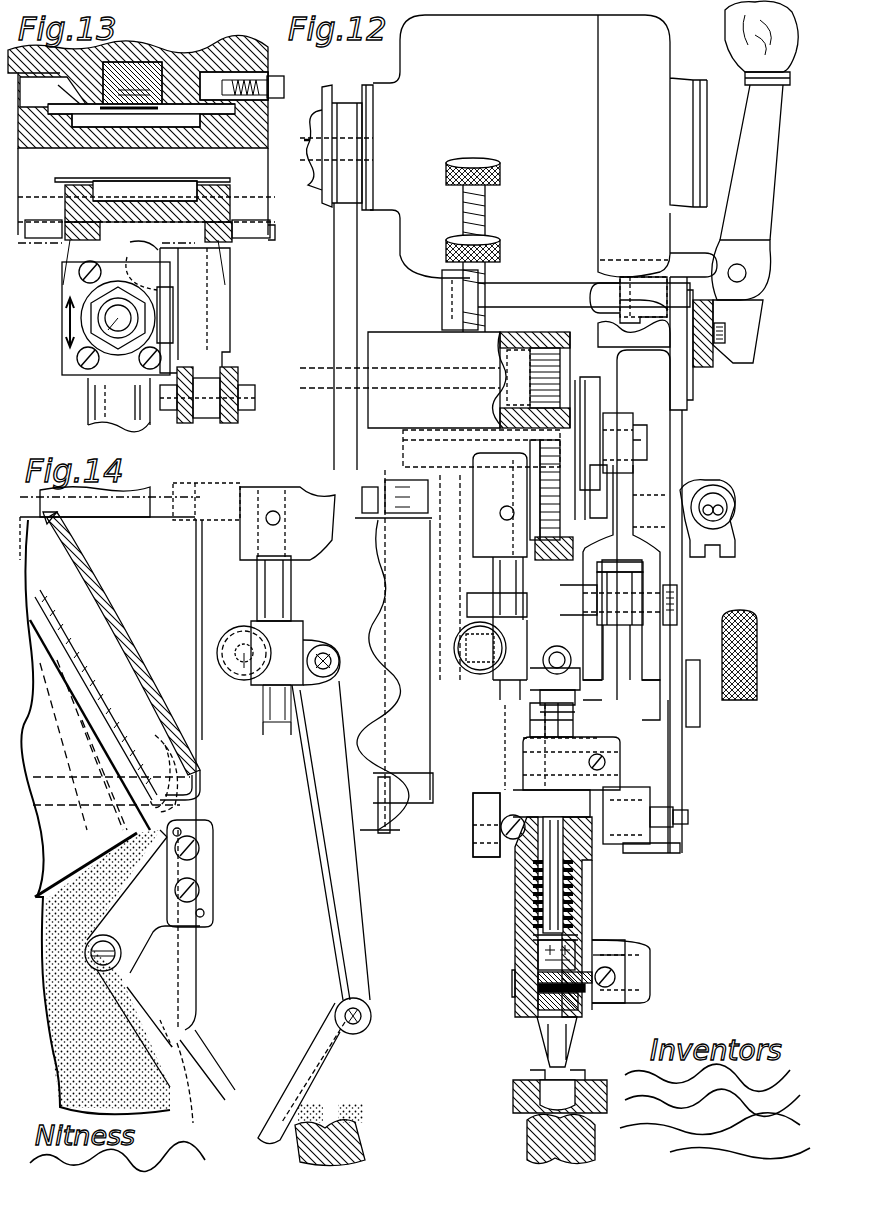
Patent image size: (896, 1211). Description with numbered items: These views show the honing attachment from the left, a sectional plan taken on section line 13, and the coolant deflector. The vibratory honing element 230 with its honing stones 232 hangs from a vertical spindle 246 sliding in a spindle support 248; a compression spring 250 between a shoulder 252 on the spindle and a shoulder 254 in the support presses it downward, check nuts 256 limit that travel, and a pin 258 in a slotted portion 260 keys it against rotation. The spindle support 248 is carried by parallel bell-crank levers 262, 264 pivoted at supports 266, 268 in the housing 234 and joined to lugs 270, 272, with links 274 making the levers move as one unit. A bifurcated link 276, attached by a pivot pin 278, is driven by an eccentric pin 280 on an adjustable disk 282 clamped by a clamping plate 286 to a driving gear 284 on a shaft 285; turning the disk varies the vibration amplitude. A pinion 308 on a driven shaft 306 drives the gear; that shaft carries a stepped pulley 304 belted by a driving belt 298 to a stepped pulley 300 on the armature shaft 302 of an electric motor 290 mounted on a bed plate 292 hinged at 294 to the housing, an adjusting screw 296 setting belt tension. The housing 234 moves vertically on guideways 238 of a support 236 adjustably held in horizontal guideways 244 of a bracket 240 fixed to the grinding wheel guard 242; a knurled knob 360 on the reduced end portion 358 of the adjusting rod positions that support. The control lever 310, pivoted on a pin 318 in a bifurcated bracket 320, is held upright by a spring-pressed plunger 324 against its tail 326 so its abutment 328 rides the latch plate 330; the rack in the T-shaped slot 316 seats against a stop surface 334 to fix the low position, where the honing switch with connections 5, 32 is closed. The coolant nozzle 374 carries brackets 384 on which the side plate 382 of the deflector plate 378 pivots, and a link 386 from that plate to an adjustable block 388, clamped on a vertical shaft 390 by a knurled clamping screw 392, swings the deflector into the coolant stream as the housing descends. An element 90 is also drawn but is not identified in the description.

In FIG. 12, the switch connection 5 is at (733, 498).
In FIG. 12, the section line 13 is at (440, 665).
In FIG. 12, the switch connection 32 is at (730, 515).
In FIG. 14, the lever 90 is at (105, 1005).
In FIG. 13, the vibratory honing element 230 is at (75, 378).
In FIG. 12, the vibratory honing element 230 is at (515, 1088).
In FIG. 12, the honing stones 232 is at (540, 1120).
In FIG. 14, the honing stones 232 is at (340, 1118).
In FIG. 13, the housing 234 is at (200, 135).
In FIG. 12, the housing 234 is at (605, 322).
In FIG. 14, the housing 234 is at (247, 530).
In FIG. 13, the support 236 is at (190, 56).
In FIG. 12, the support 236 is at (648, 318).
In FIG. 14, the support 236 is at (130, 492).
In FIG. 13, the guideways 238 is at (141, 119).
In FIG. 12, the bracket 240 is at (390, 643).
In FIG. 14, the bracket 240 is at (185, 617).
In FIG. 14, the grinding wheel guard 242 is at (70, 707).
In FIG. 12, the horizontal guideways 244 is at (398, 515).
In FIG. 14, the horizontal guideways 244 is at (157, 520).
In FIG. 13, the vertical spindle 246 is at (115, 322).
In FIG. 12, the vertical spindle 246 is at (565, 1030).
In FIG. 13, the spindle support 248 is at (165, 172).
In FIG. 12, the spindle support 248 is at (522, 1013).
In FIG. 12, the compression spring 250 is at (515, 935).
In FIG. 12, the shoulder on spindle 252 is at (575, 918).
In FIG. 12, the shoulder in spindle support 254 is at (573, 883).
In FIG. 13, the check nuts 256 is at (100, 322).
In FIG. 12, the check nuts 256 is at (530, 722).
In FIG. 12, the pin 258 is at (588, 1003).
In FIG. 12, the slotted portion 260 is at (630, 980).
In FIG. 13, the bell-crank lever 262 is at (70, 262).
In FIG. 12, the bell-crank lever 262 is at (650, 572).
In FIG. 13, the bell-crank lever 264 is at (75, 240).
In FIG. 12, the bell-crank lever 264 is at (675, 812).
In FIG. 12, the pivotal support 266 is at (467, 605).
In FIG. 13, the pivotal support 268 is at (270, 232).
In FIG. 12, the pivotal support 268 is at (473, 823).
In FIG. 13, the lug 270 is at (158, 258).
In FIG. 12, the lug 270 is at (562, 747).
In FIG. 12, the lug 272 is at (625, 950).
In FIG. 13, the links 274 is at (230, 423).
In FIG. 12, the links 274 is at (652, 680).
In FIG. 12, the link 276 is at (670, 478).
In FIG. 12, the pivot pin 278 is at (679, 598).
In FIG. 12, the eccentric pin 280 is at (650, 440).
In FIG. 12, the eccentric disk 282 is at (598, 440).
In FIG. 12, the driving gear 284 is at (548, 474).
In FIG. 12, the rotatable shaft 285 is at (418, 472).
In FIG. 12, the clamping plate 286 is at (605, 395).
In FIG. 12, the electric motor 290 is at (542, 86).
In FIG. 12, the bed plate 292 is at (535, 292).
In FIG. 12, the hinge 294 is at (442, 300).
In FIG. 12, the adjusting screw 296 is at (487, 220).
In FIG. 12, the driving belt 298 is at (350, 250).
In FIG. 12, the stepped pulley 300 is at (347, 72).
In FIG. 12, the armature shaft 302 is at (360, 147).
In FIG. 12, the stepped pulley 304 is at (327, 365).
In FIG. 12, the driven shaft 306 is at (445, 390).
In FIG. 12, the pinion 308 is at (548, 375).
In FIG. 12, the control lever 310 is at (760, 117).
In FIG. 13, the T-shaped slot 316 is at (96, 126).
In FIG. 12, the pivot pin 318 is at (746, 273).
In FIG. 12, the bifurcated bracket 320 is at (745, 250).
In FIG. 12, the spring-pressed plunger 324 is at (730, 335).
In FIG. 12, the tail 326 is at (745, 312).
In FIG. 12, the abutment 328 is at (688, 250).
In FIG. 12, the latch plate 330 is at (692, 408).
In FIG. 13, the stop surface 334 is at (112, 76).
In FIG. 12, the reduced forward end portion 358 is at (690, 720).
In FIG. 12, the knurled operating knob 360 is at (757, 660).
In FIG. 14, the coolant supply nozzle 374 is at (97, 617).
In FIG. 14, the deflector plate 378 is at (130, 987).
In FIG. 14, the side plate 382 is at (275, 1040).
In FIG. 14, the brackets 384 is at (153, 880).
In FIG. 12, the link 386 is at (565, 690).
In FIG. 14, the link 386 is at (330, 818).
In FIG. 12, the adjustable block 388 is at (530, 665).
In FIG. 14, the adjustable block 388 is at (275, 637).
In FIG. 12, the vertical shaft 390 is at (490, 537).
In FIG. 14, the vertical shaft 390 is at (278, 724).
In FIG. 12, the clamping screw 392 is at (458, 645).
In FIG. 14, the clamping screw 392 is at (235, 680).